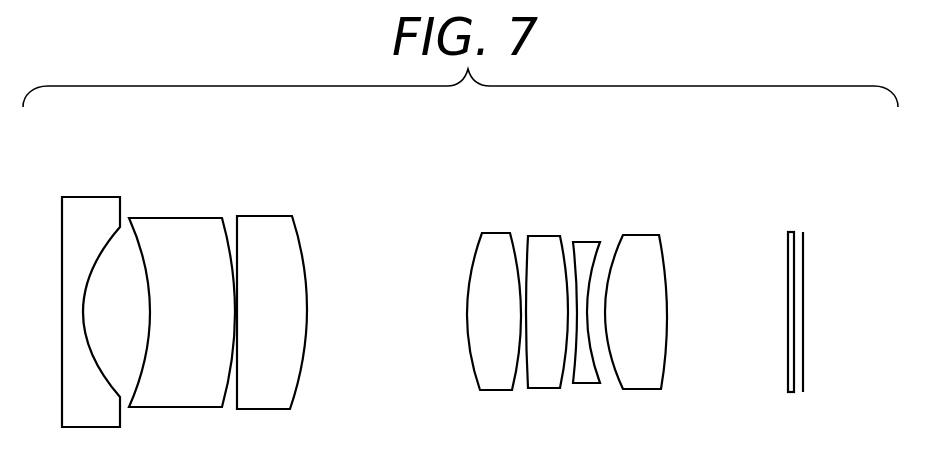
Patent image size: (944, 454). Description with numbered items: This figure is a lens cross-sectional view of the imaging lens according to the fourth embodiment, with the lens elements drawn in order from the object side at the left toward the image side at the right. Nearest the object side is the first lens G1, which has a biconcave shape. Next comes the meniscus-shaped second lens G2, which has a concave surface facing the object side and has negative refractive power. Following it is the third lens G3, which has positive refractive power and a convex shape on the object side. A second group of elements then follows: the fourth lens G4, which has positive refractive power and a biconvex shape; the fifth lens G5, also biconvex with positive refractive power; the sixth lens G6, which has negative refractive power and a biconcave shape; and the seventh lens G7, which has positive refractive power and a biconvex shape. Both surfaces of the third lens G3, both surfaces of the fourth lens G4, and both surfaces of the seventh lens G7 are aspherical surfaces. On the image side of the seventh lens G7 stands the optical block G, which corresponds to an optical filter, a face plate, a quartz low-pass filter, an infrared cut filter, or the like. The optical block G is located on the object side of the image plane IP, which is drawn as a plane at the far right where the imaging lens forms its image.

The first lens G1 is at (88, 202).
The second lens G2 is at (182, 219).
The third lens G3 is at (267, 219).
The fourth lens G4 is at (497, 235).
The fifth lens G5 is at (545, 236).
The sixth lens G6 is at (587, 242).
The seventh lens G7 is at (647, 236).
The optical block G is at (787, 230).
The image plane IP is at (804, 241).